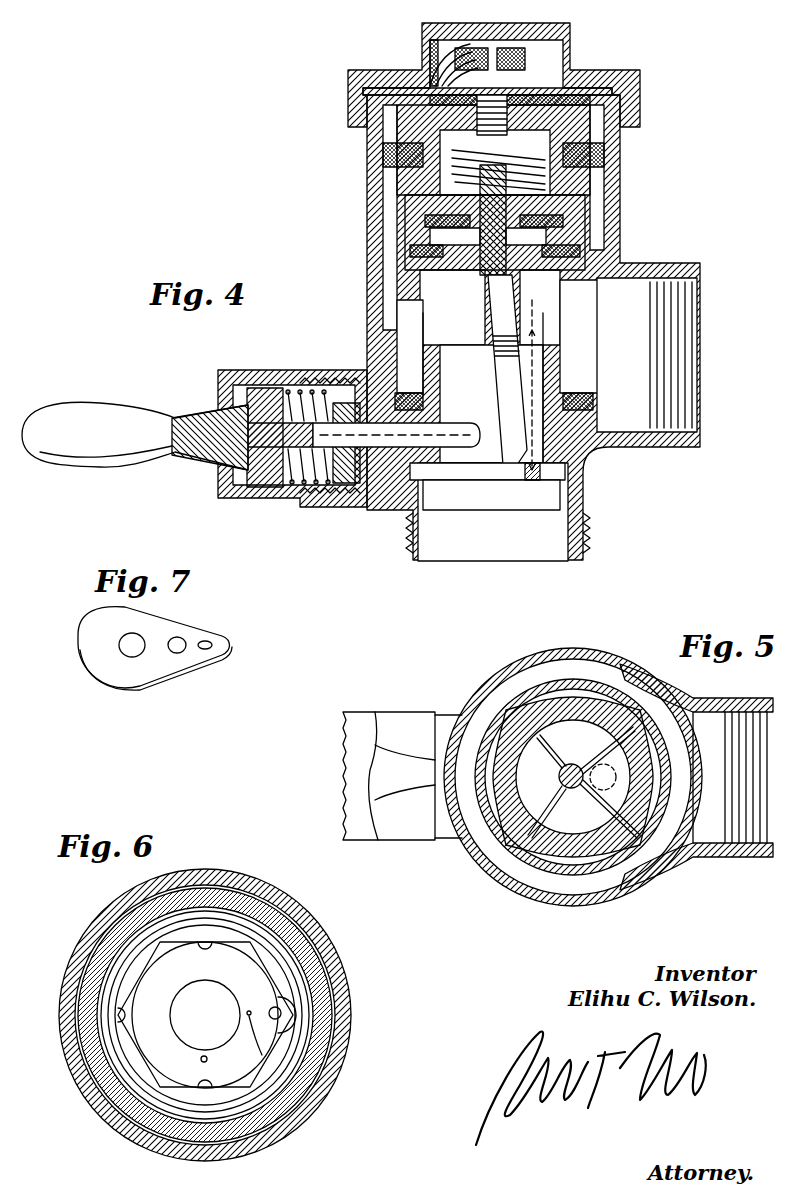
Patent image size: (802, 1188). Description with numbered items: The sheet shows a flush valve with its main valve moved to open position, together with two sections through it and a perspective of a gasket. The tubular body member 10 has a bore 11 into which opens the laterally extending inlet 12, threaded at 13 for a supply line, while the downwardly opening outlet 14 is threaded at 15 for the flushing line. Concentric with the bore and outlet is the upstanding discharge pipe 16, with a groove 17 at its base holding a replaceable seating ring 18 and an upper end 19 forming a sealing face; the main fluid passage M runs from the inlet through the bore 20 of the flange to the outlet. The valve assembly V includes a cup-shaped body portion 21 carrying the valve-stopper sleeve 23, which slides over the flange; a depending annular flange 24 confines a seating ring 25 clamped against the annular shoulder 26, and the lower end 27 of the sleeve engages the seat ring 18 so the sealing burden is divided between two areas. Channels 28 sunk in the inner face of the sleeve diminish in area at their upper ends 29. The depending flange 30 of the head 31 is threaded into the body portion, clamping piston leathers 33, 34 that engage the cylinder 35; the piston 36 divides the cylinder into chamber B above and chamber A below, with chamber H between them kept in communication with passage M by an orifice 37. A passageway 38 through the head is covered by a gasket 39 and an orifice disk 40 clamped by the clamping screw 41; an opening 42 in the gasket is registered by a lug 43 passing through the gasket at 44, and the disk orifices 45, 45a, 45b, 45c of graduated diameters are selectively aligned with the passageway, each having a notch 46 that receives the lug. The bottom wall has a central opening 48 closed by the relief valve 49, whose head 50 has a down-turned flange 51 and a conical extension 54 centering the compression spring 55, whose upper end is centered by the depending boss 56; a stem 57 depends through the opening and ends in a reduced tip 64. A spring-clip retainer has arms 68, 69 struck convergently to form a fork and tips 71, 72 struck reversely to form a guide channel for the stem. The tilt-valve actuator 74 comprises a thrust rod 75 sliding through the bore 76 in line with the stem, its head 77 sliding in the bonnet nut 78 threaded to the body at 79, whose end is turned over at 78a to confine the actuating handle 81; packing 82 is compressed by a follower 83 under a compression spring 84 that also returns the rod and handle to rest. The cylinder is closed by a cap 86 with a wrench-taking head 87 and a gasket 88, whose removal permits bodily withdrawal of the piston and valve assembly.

In FIG. 4, the tubular body member 10 is at (607, 170).
In FIG. 5, the tubular body member 10 is at (493, 662).
In FIG. 6, the tubular body member 10 is at (250, 880).
In FIG. 4, the bore 11 is at (640, 282).
In FIG. 5, the bore 11 is at (630, 866).
In FIG. 4, the inlet 12 is at (690, 325).
In FIG. 5, the inlet 12 is at (720, 823).
In FIG. 4, the threaded attachment 13 is at (682, 342).
In FIG. 5, the threaded attachment 13 is at (755, 820).
In FIG. 4, the outlet 14 is at (503, 540).
In FIG. 4, the threaded connection 15 is at (593, 540).
In FIG. 4, the annular flange or discharge pipe 16 is at (566, 387).
In FIG. 5, the annular flange or discharge pipe 16 is at (522, 824).
In FIG. 4, the groove 17 is at (425, 402).
In FIG. 4, the seating ring 18 is at (594, 402).
In FIG. 4, the upper end of the flange 19 is at (440, 325).
In FIG. 4, the bore of flange 20 is at (472, 372).
In FIG. 4, the body portion 21 is at (483, 222).
In FIG. 4, the valve-stopper sleeve 23 is at (582, 312).
In FIG. 5, the valve-stopper sleeve 23 is at (595, 688).
In FIG. 4, the annular flange 24 is at (440, 270).
In FIG. 4, the seating ring 25 is at (577, 256).
In FIG. 4, the annular shoulder 26 is at (420, 254).
In FIG. 4, the lower end of sleeve 27 is at (440, 330).
In FIG. 4, the passageways or channels 28 is at (440, 312).
In FIG. 5, the passageways or channels 28 is at (576, 712).
In FIG. 4, the upper ends of passageways 29 is at (445, 288).
In FIG. 4, the depending flange of head 30 is at (575, 140).
In FIG. 4, the head 31 is at (612, 92).
In FIG. 6, the head 31 is at (262, 1078).
In FIG. 4, the piston leather 33 is at (380, 135).
In FIG. 6, the piston leather 33 is at (278, 940).
In FIG. 4, the piston leather 34 is at (420, 210).
In FIG. 4, the cylinder 35 is at (420, 230).
In FIG. 6, the cylinder 35 is at (70, 978).
In FIG. 4, the piston 36 is at (398, 156).
In FIG. 4, the orifice 37 is at (566, 218).
In FIG. 4, the passageway 38 is at (590, 100).
In FIG. 4, the gasket 39 is at (622, 72).
In FIG. 7, the gasket 39 is at (130, 696).
In FIG. 6, the gasket 39 is at (296, 1020).
In FIG. 4, the orifice disk 40 is at (472, 52).
In FIG. 6, the orifice disk 40 is at (252, 986).
In FIG. 4, the clamping screw 41 is at (440, 38).
In FIG. 6, the clamping screw 41 is at (190, 1032).
In FIG. 7, the opening 42 is at (178, 652).
In FIG. 4, the pin or lug 43 is at (522, 63).
In FIG. 6, the pin or lug 43 is at (284, 1013).
In FIG. 7, the gasket hole 44 is at (208, 650).
In FIG. 6, the orifice 45 is at (262, 1075).
In FIG. 6, the orifice 45a is at (210, 1059).
In FIG. 6, the orifice 45b is at (160, 1015).
In FIG. 6, the orifice 45c is at (206, 980).
In FIG. 6, the notch or recess 46 is at (214, 934).
In FIG. 4, the central opening 48 is at (582, 232).
In FIG. 4, the relief or auxiliary valve 49 is at (440, 200).
In FIG. 4, the circular head 50 is at (498, 170).
In FIG. 4, the annular flange 51 is at (570, 203).
In FIG. 4, the conical extension 54 is at (420, 182).
In FIG. 4, the compression spring 55 is at (380, 108).
In FIG. 4, the depending boss 56 is at (422, 82).
In FIG. 4, the stem or extension 57 is at (482, 472).
In FIG. 5, the stem or extension 57 is at (648, 743).
In FIG. 4, the tip 64 is at (518, 480).
In FIG. 5, the retainer arm 68 is at (560, 752).
In FIG. 5, the retainer arm 69 is at (582, 842).
In FIG. 5, the retainer tip 71 is at (603, 758).
In FIG. 5, the retainer tip 72 is at (600, 797).
In FIG. 4, the tilt-valve actuator 74 is at (280, 494).
In FIG. 4, the plunger or thrust rod 75 is at (400, 505).
In FIG. 4, the bore 76 is at (366, 475).
In FIG. 4, the head 77 is at (282, 372).
In FIG. 4, the bonnet nut 78 is at (336, 498).
In FIG. 5, the bonnet nut 78 is at (398, 728).
In FIG. 4, the turned-over end 78a is at (225, 385).
In FIG. 4, the threads 79 is at (352, 460).
In FIG. 4, the actuating handle 81 is at (86, 405).
In FIG. 4, the packing 82 is at (322, 372).
In FIG. 4, the follower or gland 83 is at (312, 382).
In FIG. 4, the compression spring 84 is at (340, 478).
In FIG. 4, the cap 86 is at (582, 70).
In FIG. 6, the cap 86 is at (280, 897).
In FIG. 4, the wrench-taking head 87 is at (572, 32).
In FIG. 4, the gasket 88 is at (395, 100).
In FIG. 4, the cylinder chamber below piston A is at (385, 232).
In FIG. 4, the cylinder chamber above piston B is at (372, 112).
In FIG. 4, the passage C is at (537, 118).
In FIG. 4, the piston-hollow or chamber H is at (440, 176).
In FIG. 4, the main fluid passage M is at (562, 365).
In FIG. 4, the valve assembly V is at (560, 235).